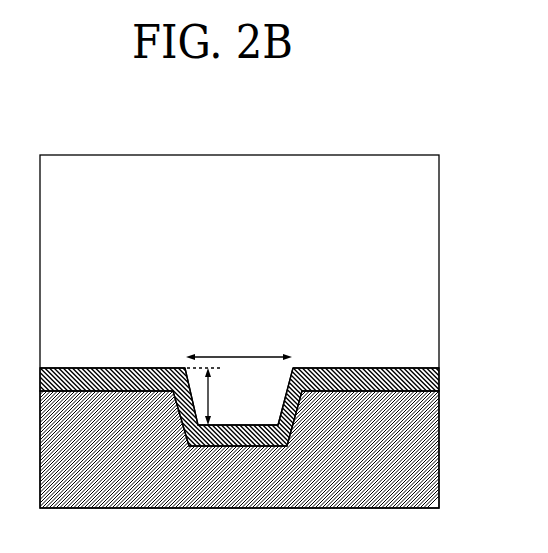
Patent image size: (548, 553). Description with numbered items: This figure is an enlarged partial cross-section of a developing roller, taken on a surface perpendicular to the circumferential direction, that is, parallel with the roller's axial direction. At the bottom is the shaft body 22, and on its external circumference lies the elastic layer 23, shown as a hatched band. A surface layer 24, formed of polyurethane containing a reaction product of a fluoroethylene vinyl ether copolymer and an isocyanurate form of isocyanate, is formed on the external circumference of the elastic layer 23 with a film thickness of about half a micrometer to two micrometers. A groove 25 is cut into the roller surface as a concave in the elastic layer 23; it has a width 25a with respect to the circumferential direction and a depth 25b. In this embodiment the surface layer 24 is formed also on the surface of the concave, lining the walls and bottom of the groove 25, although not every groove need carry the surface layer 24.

The shaft body 22 is at (428, 477).
The elastic layer 23 is at (437, 380).
The surface layer 24 is at (430, 290).
The groove 25 is at (204, 318).
The width 25a is at (264, 355).
The depth 25b is at (210, 402).